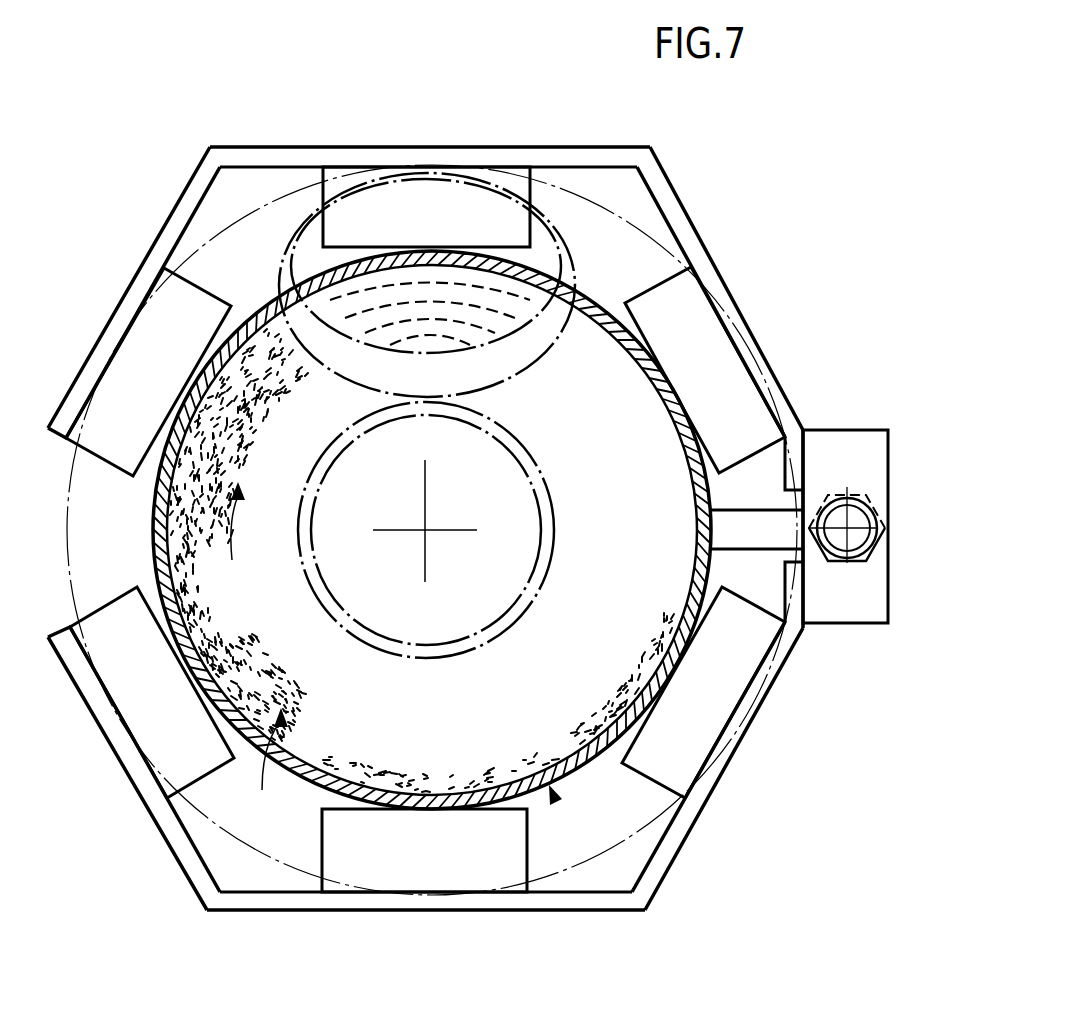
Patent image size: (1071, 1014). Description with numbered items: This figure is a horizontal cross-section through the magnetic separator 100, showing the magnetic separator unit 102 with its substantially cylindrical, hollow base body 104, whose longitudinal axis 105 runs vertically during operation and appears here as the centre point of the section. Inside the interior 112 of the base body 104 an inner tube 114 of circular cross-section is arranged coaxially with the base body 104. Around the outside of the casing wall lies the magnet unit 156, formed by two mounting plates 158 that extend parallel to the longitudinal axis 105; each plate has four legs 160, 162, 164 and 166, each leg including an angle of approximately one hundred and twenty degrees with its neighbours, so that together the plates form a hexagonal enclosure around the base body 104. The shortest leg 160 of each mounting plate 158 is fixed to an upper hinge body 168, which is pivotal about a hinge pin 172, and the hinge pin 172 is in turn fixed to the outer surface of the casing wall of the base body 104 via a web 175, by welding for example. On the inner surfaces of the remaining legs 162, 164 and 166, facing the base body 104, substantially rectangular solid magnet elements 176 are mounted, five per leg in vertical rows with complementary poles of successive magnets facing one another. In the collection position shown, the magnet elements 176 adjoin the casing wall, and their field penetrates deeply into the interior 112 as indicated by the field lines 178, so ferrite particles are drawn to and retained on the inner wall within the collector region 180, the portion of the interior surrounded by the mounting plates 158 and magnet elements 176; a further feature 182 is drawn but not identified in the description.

The magnetic separator 100 is at (222, 108).
The magnetic separator unit 102 is at (288, 130).
The base body 104 is at (588, 764).
The longitudinal axis 105 is at (425, 530).
The interior 112 is at (577, 402).
The inner tube 114 is at (557, 503).
The magnet unit 156 is at (515, 923).
The mounting plates 158 is at (566, 154).
The shortest leg 160 is at (797, 463).
The leg 162 is at (745, 337).
The leg 164 is at (402, 147).
The leg 166 is at (137, 283).
The upper hinge body 168 is at (845, 473).
The hinge pin 172 is at (853, 537).
The web 175 is at (737, 507).
The magnet elements 176 is at (473, 218).
The field lines 178 is at (573, 263).
The collector region 180 is at (278, 725).
The flow arrow 182 is at (556, 802).